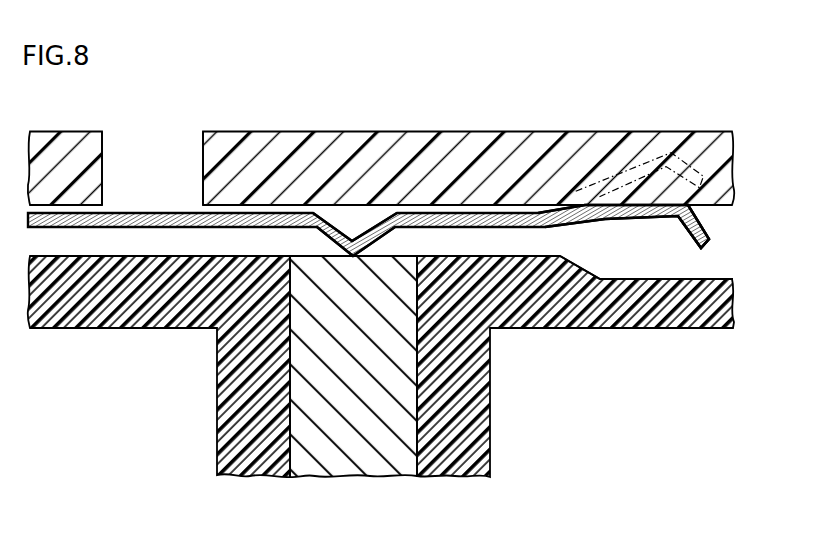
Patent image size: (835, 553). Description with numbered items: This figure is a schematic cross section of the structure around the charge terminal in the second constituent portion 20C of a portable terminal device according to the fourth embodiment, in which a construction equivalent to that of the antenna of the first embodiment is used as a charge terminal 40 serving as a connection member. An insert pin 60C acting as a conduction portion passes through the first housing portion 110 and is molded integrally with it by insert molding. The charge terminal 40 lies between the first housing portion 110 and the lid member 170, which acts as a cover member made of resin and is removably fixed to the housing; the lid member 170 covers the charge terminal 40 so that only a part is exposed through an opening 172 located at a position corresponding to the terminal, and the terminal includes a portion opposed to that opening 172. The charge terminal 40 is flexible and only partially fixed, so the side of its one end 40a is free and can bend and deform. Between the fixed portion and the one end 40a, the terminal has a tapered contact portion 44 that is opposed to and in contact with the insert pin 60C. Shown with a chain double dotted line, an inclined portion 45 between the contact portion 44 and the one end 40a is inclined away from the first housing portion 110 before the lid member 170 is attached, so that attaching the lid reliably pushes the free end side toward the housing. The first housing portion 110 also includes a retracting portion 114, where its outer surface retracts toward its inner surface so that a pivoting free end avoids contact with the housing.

The second constituent portion 20C is at (721, 106).
The opening 172 is at (203, 167).
The lid member 170 is at (313, 163).
The charge terminal 40 is at (457, 204).
The contact portion 44 is at (341, 232).
The inclined portion 45 is at (603, 187).
The one end 40a is at (703, 247).
The first housing portion 110 is at (532, 297).
The retracting portion 114 is at (705, 279).
The insert pin 60C is at (355, 435).